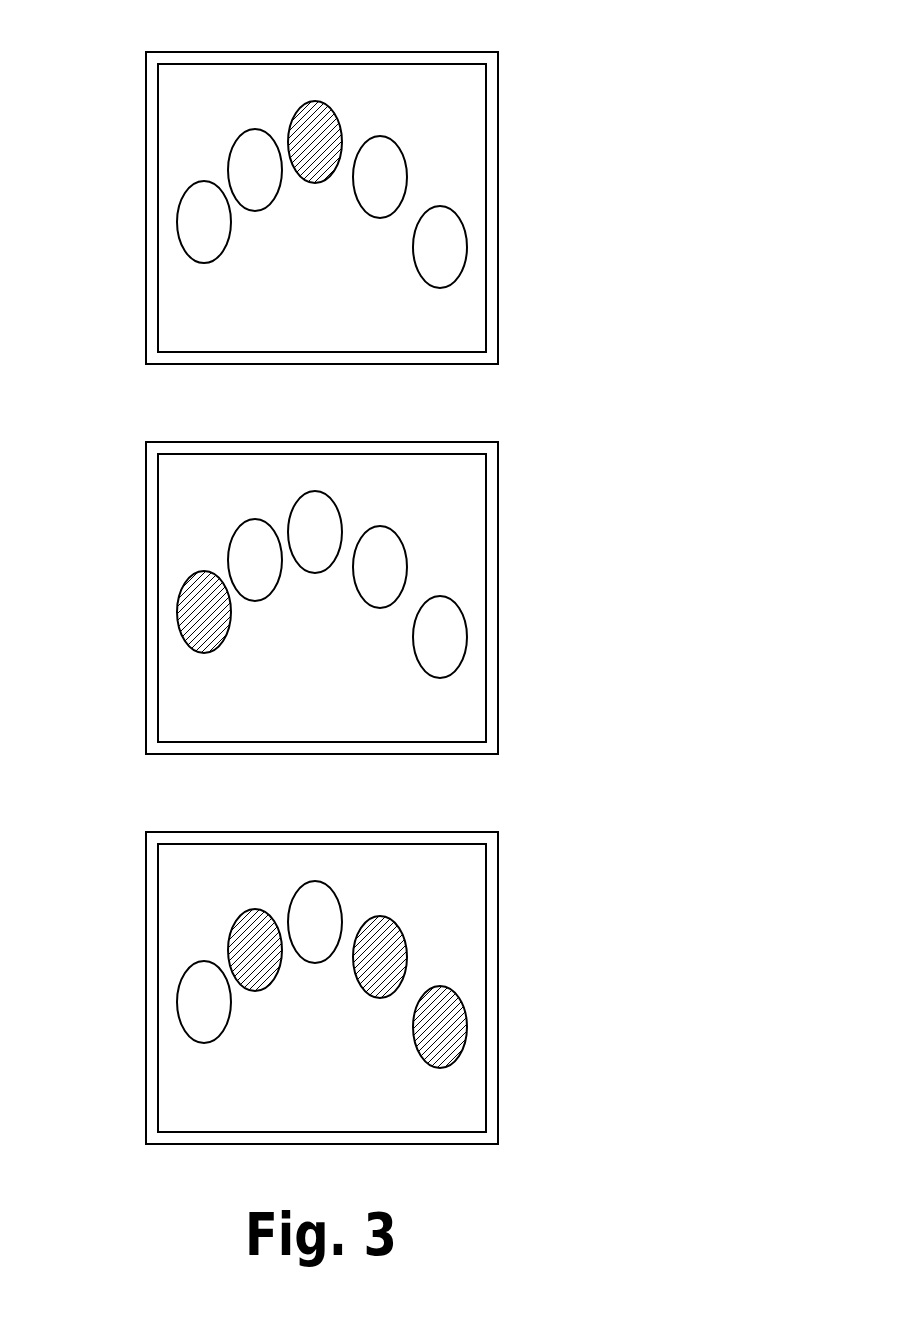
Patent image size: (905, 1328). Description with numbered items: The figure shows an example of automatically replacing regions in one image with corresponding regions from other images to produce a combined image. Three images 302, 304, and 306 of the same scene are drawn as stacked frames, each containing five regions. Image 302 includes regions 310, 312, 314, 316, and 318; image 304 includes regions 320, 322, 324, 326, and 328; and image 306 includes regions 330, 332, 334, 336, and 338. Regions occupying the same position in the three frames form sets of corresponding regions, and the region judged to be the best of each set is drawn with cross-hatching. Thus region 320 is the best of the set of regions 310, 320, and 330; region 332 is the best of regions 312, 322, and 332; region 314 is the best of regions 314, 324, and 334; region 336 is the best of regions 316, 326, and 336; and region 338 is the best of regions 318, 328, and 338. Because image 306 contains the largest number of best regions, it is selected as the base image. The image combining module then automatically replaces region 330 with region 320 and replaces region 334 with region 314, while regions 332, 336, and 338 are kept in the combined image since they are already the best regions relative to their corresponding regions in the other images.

The image 302 is at (359, 189).
The image 304 is at (359, 579).
The image 306 is at (359, 969).
The region 310 is at (139, 196).
The region 312 is at (171, 137).
The region 314 is at (436, 117).
The region 316 is at (469, 151).
The region 318 is at (499, 226).
The region 320 is at (139, 586).
The region 322 is at (171, 527).
The region 324 is at (436, 507).
The region 326 is at (469, 541).
The region 328 is at (499, 616).
The region 330 is at (139, 976).
The region 332 is at (171, 917).
The region 334 is at (436, 897).
The region 336 is at (469, 931).
The region 338 is at (499, 1006).